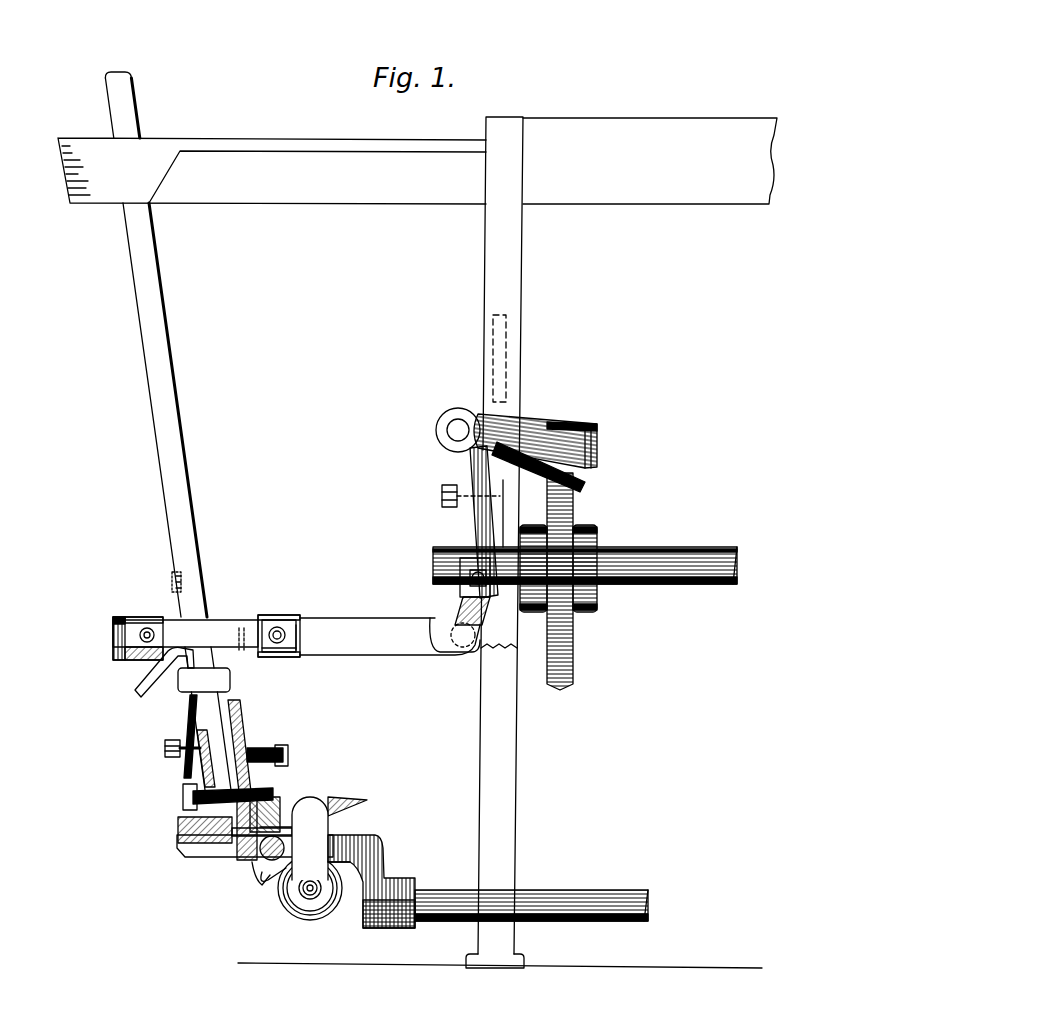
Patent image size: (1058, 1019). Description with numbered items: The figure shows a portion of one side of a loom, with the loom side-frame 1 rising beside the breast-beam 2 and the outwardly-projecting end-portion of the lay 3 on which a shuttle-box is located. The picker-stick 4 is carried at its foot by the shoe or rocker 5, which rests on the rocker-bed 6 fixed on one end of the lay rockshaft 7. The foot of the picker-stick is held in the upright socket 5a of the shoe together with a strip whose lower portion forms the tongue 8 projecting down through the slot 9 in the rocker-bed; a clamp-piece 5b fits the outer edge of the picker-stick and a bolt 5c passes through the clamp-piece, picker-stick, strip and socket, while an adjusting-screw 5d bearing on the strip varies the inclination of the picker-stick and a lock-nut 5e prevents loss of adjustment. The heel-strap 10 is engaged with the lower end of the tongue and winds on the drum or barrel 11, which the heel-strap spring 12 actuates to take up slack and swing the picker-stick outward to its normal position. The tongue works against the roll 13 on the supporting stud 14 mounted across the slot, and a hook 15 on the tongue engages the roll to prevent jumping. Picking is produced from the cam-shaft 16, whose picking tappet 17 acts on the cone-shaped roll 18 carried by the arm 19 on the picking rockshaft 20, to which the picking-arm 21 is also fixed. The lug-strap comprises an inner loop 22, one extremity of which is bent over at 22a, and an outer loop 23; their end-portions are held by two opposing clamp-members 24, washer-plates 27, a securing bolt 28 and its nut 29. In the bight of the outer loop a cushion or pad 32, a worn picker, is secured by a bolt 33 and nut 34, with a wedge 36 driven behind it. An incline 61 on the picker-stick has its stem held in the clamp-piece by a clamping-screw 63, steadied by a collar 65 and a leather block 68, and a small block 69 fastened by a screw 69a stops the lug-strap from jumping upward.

The loom side-frame 1 is at (482, 288).
The breast-beam 2 is at (633, 204).
The end-portion of the lay 3 is at (325, 203).
The picker-stick 4 is at (181, 398).
The shoe or rocker 5 is at (333, 797).
The socket of the shoe or rocker 5a is at (281, 785).
The clamp-piece 5b is at (193, 787).
The bolt 5c is at (287, 792).
The adjusting-screw 5d is at (281, 746).
The lock-nut 5e is at (260, 744).
The rocker-bed 6 is at (362, 834).
The lay rockshaft 7 is at (439, 892).
The tongue 8 is at (245, 838).
The slot 9 is at (203, 845).
The heel-strap 10 is at (280, 903).
The drum or barrel 11 is at (283, 894).
The heel-strap spring 12 is at (345, 868).
The roll 13 is at (268, 868).
The supporting stud 14 is at (277, 865).
The hook 15 is at (267, 878).
The cam-shaft 16 is at (700, 541).
The picking tappet 17 is at (576, 507).
The cone-shaped roll 18 is at (585, 481).
The arm 19 is at (560, 420).
The picking rockshaft 20 is at (456, 424).
The picking-arm 21 is at (472, 533).
The loop 22 is at (383, 657).
The bent extremity 22a is at (241, 627).
The outer loop 23 is at (227, 651).
The clamp-members 24 is at (300, 617).
The washer-plates 27 is at (290, 660).
The securing bolt 28 is at (275, 619).
The nut 29 is at (293, 632).
The cushion or pad 32 is at (146, 619).
The bolt 33 is at (114, 636).
The nut 34 is at (121, 649).
The wedge 36 is at (114, 618).
The incline 61 is at (143, 677).
The clamping-screw 63 is at (165, 751).
The collar 65 is at (231, 682).
The block 68 is at (186, 723).
The block 69 is at (172, 573).
The screw 69a is at (169, 582).